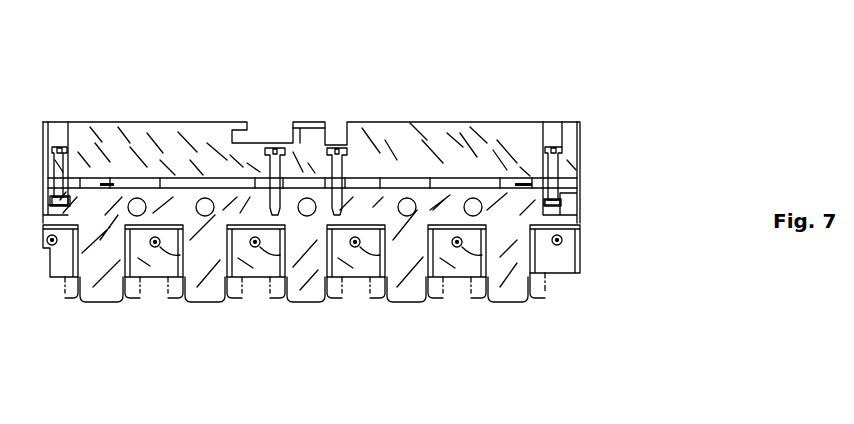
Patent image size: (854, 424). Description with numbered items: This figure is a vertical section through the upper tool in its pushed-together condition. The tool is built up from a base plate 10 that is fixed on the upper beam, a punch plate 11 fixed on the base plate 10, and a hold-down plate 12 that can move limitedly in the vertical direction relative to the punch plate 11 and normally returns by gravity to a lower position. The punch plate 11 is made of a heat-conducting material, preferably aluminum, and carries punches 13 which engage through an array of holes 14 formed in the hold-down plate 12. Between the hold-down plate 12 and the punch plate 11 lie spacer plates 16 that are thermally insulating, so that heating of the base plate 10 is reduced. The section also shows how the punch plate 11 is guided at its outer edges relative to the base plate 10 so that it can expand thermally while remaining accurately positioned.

The base plate 10 is at (415, 163).
The punch plate 11 is at (510, 222).
The hold-down plate 12 is at (154, 247).
The punches 13 is at (425, 255).
The holes 14 is at (370, 256).
The spacer plates 16 is at (352, 178).